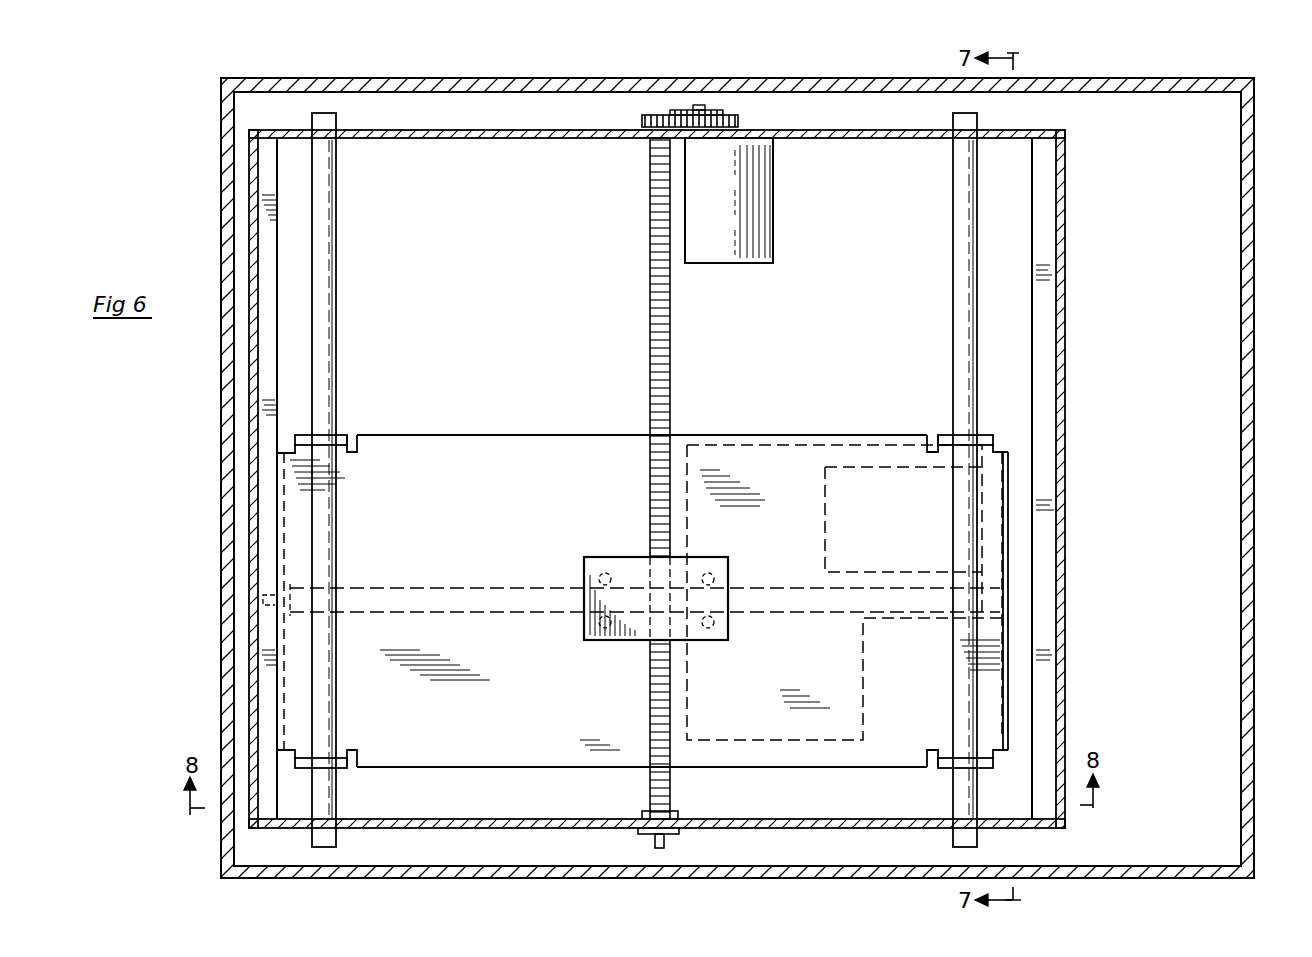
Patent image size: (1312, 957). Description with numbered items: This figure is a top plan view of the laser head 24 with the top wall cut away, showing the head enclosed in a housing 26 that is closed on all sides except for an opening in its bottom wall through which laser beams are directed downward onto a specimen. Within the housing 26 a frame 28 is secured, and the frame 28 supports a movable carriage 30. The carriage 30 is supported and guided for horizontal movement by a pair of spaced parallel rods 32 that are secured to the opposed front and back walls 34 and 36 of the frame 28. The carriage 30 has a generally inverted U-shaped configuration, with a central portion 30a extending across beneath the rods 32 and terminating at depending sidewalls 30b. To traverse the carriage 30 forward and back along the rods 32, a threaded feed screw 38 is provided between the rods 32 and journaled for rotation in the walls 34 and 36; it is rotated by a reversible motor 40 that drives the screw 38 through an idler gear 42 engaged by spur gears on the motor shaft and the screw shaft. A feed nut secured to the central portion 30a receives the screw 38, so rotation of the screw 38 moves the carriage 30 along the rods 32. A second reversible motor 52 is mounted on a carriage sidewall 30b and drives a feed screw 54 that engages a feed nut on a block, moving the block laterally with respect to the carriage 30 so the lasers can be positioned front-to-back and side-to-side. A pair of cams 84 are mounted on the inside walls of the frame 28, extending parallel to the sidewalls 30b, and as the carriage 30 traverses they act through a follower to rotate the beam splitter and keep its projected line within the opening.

The laser head 24 is at (1262, 189).
The housing 26 is at (1253, 470).
The frame 28 is at (1066, 331).
The carriage 30 is at (806, 435).
The central portion 30a is at (500, 506).
The depending sidewalls 30b is at (278, 522).
The spaced parallel rods 32 is at (336, 300).
The front wall 34 is at (797, 829).
The back wall 36 is at (830, 129).
The threaded feed screw 38 is at (671, 300).
The reversible motor 40 is at (773, 188).
The idler gear 42 is at (713, 110).
The reversible motor 52 is at (824, 488).
The feed screw 54 is at (380, 587).
The cams 84 is at (1050, 230).